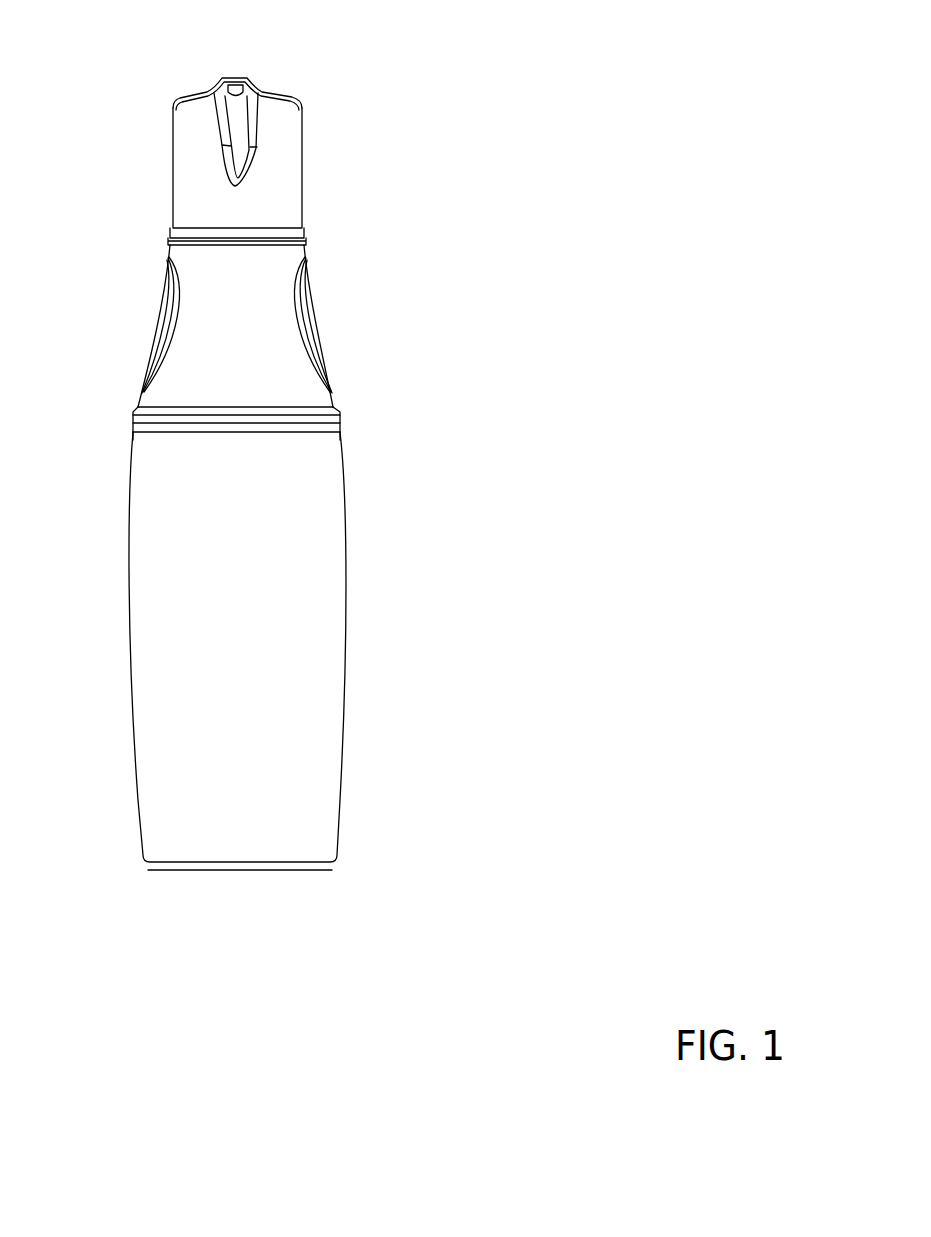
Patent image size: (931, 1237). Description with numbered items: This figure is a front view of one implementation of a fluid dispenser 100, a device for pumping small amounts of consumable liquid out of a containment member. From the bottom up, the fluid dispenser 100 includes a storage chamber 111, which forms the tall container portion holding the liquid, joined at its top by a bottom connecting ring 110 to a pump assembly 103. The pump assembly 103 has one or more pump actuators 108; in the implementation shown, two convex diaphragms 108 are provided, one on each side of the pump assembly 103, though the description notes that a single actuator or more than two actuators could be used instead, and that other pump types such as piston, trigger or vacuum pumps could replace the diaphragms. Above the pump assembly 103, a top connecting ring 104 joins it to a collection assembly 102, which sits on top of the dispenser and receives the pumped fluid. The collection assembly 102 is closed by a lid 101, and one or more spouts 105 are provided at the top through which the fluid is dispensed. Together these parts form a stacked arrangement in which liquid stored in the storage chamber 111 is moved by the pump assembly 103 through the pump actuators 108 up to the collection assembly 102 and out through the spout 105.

The fluid dispenser 100 is at (421, 44).
The lid 101 is at (283, 92).
The collection assembly 102 is at (313, 165).
The pump assembly 103 is at (430, 215).
The top connecting ring 104 is at (183, 233).
The spout 105 is at (235, 98).
The pump actuator 108 is at (157, 321).
The bottom connecting ring 110 is at (340, 418).
The storage chamber 111 is at (333, 668).